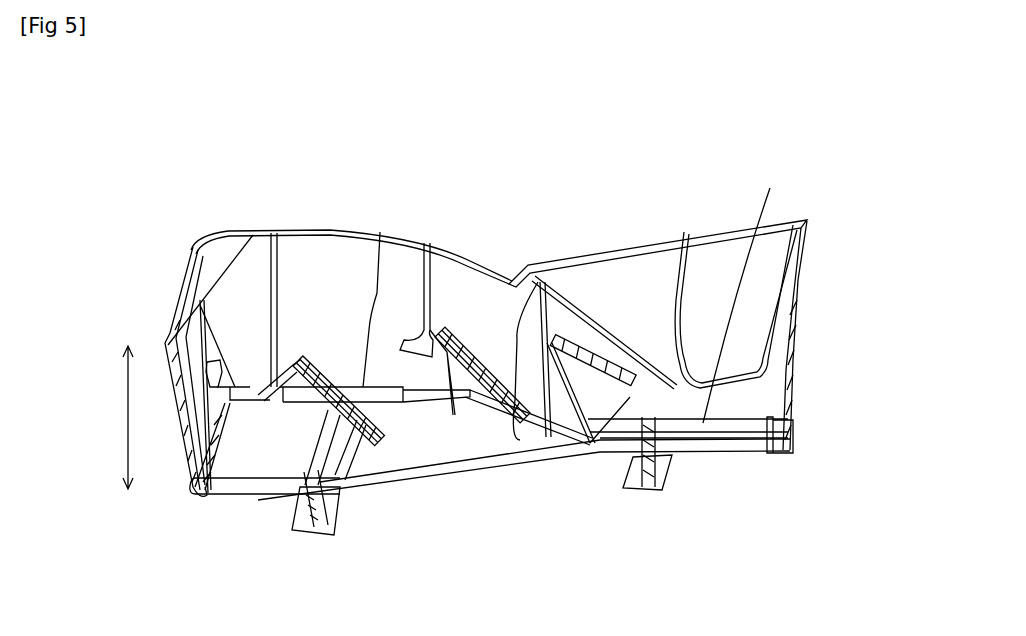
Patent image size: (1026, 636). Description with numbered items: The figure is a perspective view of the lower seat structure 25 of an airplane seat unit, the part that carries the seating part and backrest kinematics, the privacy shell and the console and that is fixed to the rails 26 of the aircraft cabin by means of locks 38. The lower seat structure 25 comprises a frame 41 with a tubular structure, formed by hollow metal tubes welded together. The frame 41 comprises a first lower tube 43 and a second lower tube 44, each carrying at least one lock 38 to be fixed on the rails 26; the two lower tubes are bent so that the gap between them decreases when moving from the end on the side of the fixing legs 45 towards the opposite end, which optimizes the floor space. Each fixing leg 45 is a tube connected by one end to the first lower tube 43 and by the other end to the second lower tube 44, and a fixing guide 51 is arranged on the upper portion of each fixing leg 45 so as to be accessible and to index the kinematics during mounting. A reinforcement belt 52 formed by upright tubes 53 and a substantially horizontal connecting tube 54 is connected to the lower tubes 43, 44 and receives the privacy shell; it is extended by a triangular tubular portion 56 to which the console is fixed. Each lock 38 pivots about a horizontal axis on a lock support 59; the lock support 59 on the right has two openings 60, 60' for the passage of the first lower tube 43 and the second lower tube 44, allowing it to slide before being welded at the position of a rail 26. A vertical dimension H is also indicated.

The lower seat structure 25 is at (208, 178).
The rails 26 is at (292, 528).
The lock 38 is at (357, 393).
The frame 41 is at (230, 499).
The first lower tube 43 is at (455, 468).
The second lower tube 44 is at (743, 292).
The fixing leg 45 is at (267, 382).
The fixing guide 51 is at (315, 382).
The reinforcement belt 52 is at (182, 254).
The upright tube 53 is at (207, 290).
The connecting tube 54 is at (380, 232).
The tubular portion 56 is at (801, 288).
The lock support 59 is at (640, 440).
The opening 60 is at (735, 474).
The opening 60' is at (736, 282).
The height H is at (126, 392).